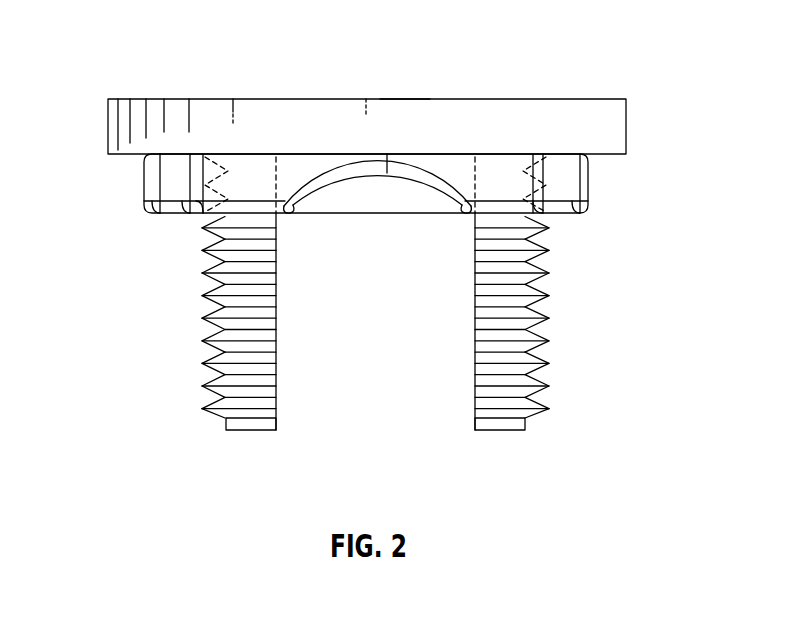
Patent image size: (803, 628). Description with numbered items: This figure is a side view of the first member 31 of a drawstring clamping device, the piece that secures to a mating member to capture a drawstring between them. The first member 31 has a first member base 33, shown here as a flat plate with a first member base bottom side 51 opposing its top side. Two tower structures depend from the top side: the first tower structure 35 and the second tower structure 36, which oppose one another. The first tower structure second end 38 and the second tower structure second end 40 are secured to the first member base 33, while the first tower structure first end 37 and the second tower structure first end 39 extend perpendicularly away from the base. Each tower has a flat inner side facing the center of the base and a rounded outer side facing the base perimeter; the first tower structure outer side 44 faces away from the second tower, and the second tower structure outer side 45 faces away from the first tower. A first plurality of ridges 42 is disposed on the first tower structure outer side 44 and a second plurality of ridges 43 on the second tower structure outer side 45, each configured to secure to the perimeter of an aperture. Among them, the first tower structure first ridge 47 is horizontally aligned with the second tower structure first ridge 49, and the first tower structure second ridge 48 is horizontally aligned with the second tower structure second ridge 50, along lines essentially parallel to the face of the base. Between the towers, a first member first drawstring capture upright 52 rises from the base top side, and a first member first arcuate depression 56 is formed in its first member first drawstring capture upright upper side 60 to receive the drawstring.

The first member 31 is at (121, 56).
The first member base 33 is at (626, 108).
The first member base bottom side 51 is at (402, 99).
The second tower structure second end 40 is at (257, 152).
The first tower structure second end 38 is at (487, 152).
The first member first drawstring capture upright 52 is at (457, 168).
The first member first arcuate depression 56 is at (397, 172).
The second plurality of ridges 43 is at (186, 323).
The second tower structure 36 is at (276, 347).
The first member first drawstring capture upright upper side 60 is at (263, 218).
The second tower structure second ridge 50 is at (203, 273).
The second tower structure outer side 45 is at (215, 389).
The first tower structure second ridge 48 is at (217, 416).
The second tower structure first end 39 is at (250, 432).
The first plurality of ridges 42 is at (560, 289).
The first tower structure 35 is at (475, 372).
The second tower structure first ridge 49 is at (550, 250).
The first tower structure outer side 44 is at (553, 385).
The first tower structure first ridge 47 is at (528, 418).
The first tower structure first end 37 is at (500, 432).